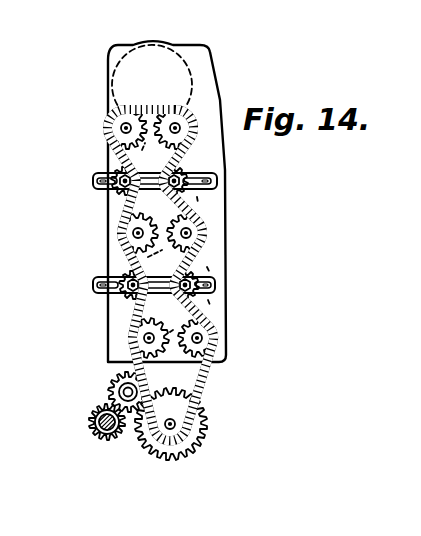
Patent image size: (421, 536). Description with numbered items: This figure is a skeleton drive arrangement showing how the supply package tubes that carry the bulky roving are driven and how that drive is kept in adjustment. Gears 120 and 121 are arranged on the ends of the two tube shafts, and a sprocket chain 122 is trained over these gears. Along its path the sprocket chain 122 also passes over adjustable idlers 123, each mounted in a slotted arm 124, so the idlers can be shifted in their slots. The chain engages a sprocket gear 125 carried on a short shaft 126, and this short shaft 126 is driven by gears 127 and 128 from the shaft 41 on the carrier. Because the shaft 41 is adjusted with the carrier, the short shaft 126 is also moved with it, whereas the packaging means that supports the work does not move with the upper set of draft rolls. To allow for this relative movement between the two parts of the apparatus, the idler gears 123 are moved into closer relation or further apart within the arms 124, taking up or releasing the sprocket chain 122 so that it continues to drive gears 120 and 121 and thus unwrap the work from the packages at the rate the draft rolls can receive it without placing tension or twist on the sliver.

The gear 120 is at (186, 119).
The gear 121 is at (122, 124).
The sprocket chain 122 is at (206, 207).
The adjustable idler 123 is at (180, 170).
The slotted arm 124 is at (218, 179).
The sprocket gear 125 is at (201, 433).
The short shaft 126 is at (170, 426).
The gear 127 is at (110, 384).
The gear 128 is at (91, 426).
The shaft 41 is at (106, 428).